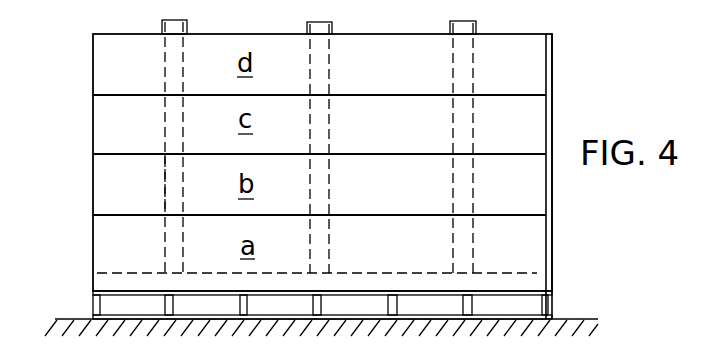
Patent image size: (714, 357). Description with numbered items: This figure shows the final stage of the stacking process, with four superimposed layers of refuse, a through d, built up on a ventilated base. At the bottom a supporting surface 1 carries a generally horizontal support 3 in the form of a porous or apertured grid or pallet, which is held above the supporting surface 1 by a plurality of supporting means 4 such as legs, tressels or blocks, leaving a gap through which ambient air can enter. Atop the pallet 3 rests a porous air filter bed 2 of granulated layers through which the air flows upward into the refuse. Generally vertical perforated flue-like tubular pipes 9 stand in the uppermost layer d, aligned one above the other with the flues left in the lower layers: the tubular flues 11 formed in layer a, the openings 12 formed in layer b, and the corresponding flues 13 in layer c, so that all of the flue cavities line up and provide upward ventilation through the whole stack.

The supporting surface 1 is at (66, 316).
The means for defining a porous air filter bed 2 is at (540, 287).
The horizontal support 3 is at (366, 300).
The supporting means 4 is at (397, 300).
The perforated flue-like tubular pipes 9 is at (307, 26).
The tubular flues 11 is at (163, 251).
The openings 12 is at (163, 189).
The upper partition (dashed) 13 is at (163, 127).